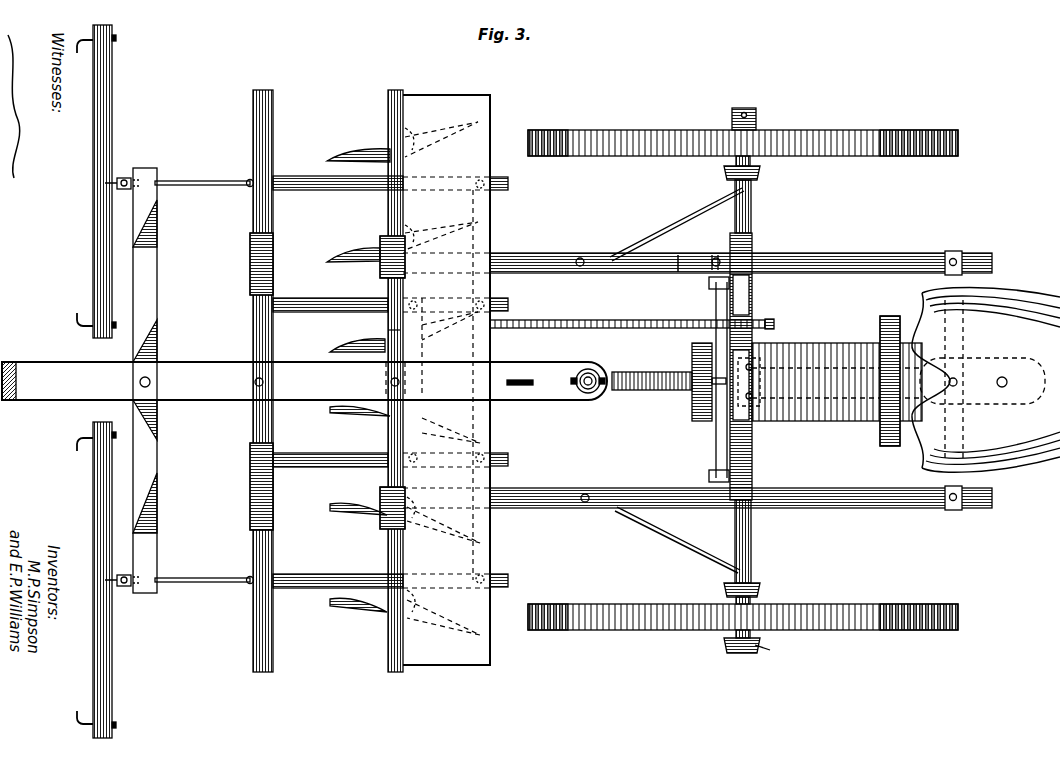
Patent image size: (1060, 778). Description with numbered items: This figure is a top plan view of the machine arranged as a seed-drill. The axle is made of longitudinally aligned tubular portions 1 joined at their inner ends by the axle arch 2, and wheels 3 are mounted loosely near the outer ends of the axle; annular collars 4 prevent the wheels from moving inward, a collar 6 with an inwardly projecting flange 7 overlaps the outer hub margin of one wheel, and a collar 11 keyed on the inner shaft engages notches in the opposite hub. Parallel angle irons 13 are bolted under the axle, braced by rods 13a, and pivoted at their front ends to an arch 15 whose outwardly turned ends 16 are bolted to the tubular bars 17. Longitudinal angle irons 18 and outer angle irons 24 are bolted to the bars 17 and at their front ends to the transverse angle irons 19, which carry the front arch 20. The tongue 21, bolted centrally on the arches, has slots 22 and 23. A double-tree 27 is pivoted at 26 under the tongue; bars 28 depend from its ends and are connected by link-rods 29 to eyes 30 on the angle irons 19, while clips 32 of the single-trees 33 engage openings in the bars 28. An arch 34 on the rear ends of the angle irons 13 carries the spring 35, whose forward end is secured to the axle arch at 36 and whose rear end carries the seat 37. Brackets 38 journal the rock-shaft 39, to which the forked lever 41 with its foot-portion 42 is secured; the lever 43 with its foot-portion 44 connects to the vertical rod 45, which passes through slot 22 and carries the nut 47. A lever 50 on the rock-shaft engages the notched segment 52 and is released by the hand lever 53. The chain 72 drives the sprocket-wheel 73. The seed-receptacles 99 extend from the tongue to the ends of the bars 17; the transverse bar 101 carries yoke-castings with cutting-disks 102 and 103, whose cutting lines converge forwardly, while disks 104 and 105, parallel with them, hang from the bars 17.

The tubular axle portion 1 is at (751, 208).
The axle arch 2 is at (741, 366).
The wheel 3 is at (743, 382).
The annular collar 4 is at (752, 381).
The collar 6 is at (730, 653).
The annular flange 7 is at (767, 653).
The collar 11 is at (750, 116).
The angle iron 13 is at (752, 378).
The brace rod 13a is at (660, 380).
The arch 15 is at (387, 328).
The outwardly-turned arch end 16 is at (382, 240).
The tubular bar 17 is at (394, 382).
The angle iron 18 is at (330, 382).
The transverse angle-iron 19 is at (264, 384).
The arch 20 is at (250, 381).
The tongue 21 is at (304, 381).
The slot 22 is at (575, 386).
The slot 23 is at (520, 372).
The angle-iron 24 is at (338, 382).
The pivot 26 is at (156, 381).
The double-tree 27 is at (145, 380).
The bar 28 is at (122, 177).
The link-rod 29 is at (202, 383).
The eye 30 is at (241, 382).
The clip 32 is at (127, 381).
The single-tree 33 is at (89, 381).
The arch 34 is at (944, 274).
The spring 35 is at (837, 381).
The spring attachment 36 is at (752, 362).
The seat 37 is at (986, 380).
The bracket 38 is at (709, 285).
The rock-shaft 39 is at (716, 441).
The lever 41 is at (712, 382).
The foot-portion 42 is at (692, 352).
The lever 43 is at (652, 390).
The foot-portion 44 is at (890, 389).
The vertical rod 45 is at (590, 371).
The nut 47 is at (602, 386).
The lever 50 is at (723, 247).
The segment 52 is at (673, 253).
The hand lever 53 is at (705, 250).
The chain 72 is at (627, 316).
The sprocket-wheel 73 is at (780, 325).
The seed-receptacle 99 is at (455, 380).
The transverse bar 101 is at (423, 347).
The cutting-disk 102 is at (404, 332).
The cutting-disk 103 is at (405, 424).
The cutting-disk 104 is at (402, 192).
The cutting-disk 105 is at (404, 566).